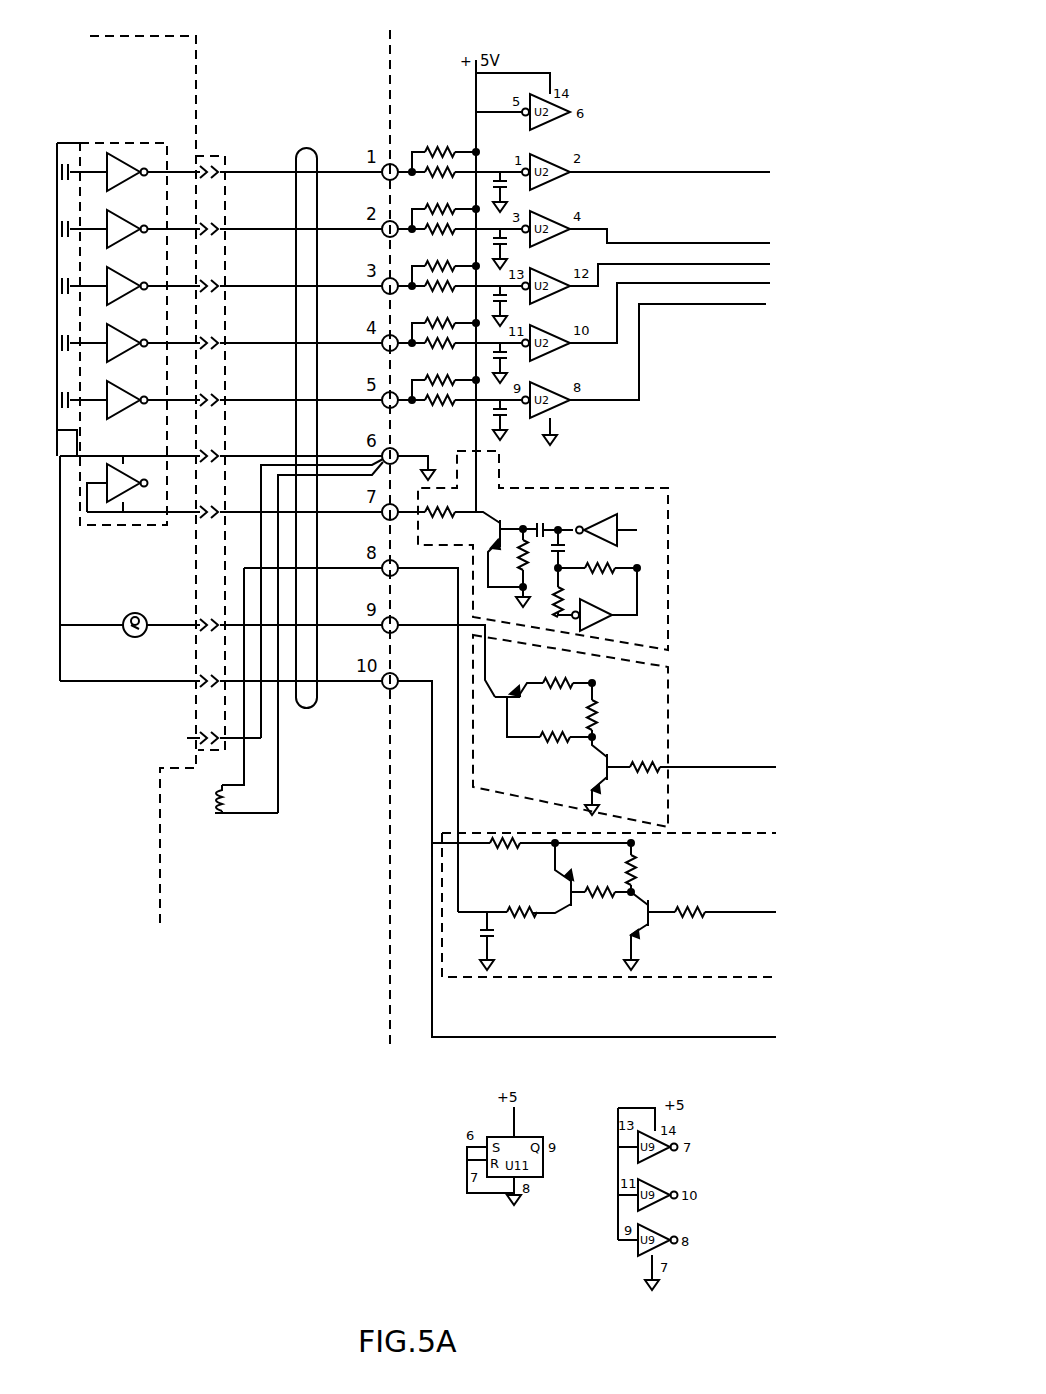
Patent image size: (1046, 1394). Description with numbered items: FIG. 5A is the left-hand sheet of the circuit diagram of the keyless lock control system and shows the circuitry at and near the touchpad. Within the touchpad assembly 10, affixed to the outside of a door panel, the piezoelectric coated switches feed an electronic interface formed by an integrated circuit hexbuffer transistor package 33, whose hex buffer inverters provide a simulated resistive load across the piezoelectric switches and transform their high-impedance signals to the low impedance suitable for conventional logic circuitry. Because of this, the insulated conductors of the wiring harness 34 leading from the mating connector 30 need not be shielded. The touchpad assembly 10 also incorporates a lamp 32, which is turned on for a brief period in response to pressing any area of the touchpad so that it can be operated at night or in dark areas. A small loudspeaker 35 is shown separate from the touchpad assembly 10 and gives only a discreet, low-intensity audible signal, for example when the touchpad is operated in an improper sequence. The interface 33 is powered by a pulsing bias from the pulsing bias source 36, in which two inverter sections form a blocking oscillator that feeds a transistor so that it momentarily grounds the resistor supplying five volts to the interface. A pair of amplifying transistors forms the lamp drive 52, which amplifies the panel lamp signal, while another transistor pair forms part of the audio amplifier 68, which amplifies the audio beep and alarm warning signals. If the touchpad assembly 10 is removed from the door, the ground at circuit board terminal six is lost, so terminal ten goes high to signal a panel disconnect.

The touchpad assembly 10 is at (163, 28).
The mating connector part 30 is at (211, 154).
The lamp 32 is at (144, 616).
The hexbuffer transistor package 33 is at (153, 142).
The wiring harness 34 is at (308, 148).
The small loudspeaker 35 is at (198, 797).
The pulsing bias source 36 is at (668, 531).
The lamp drive 52 is at (668, 722).
The audio amplifier 68 is at (730, 826).